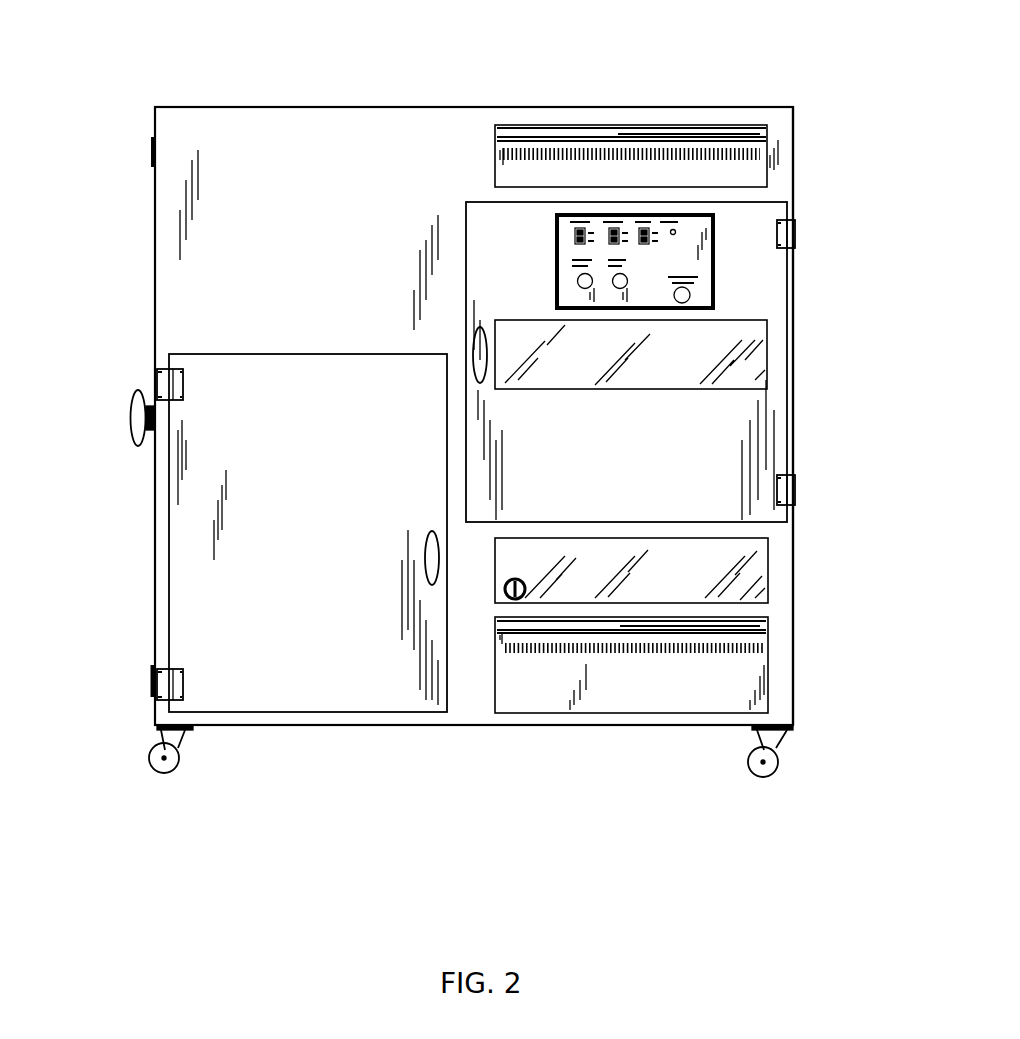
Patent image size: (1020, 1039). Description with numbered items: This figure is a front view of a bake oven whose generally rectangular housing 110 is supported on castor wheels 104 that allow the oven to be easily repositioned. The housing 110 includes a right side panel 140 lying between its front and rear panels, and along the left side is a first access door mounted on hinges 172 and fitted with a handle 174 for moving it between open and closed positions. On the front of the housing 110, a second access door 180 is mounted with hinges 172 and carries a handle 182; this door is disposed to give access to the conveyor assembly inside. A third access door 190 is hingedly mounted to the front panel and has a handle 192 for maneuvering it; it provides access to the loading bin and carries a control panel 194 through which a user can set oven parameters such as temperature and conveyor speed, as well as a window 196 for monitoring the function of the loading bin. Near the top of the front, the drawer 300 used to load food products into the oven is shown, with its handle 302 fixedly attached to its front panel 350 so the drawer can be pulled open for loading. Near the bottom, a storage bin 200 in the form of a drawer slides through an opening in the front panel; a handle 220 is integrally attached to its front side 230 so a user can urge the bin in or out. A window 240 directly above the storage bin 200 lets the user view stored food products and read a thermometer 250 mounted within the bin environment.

The castor wheels 104 is at (164, 770).
The housing 110 is at (362, 107).
The right side panel 140 is at (793, 420).
The hinges 172 is at (151, 143).
The handle 174 is at (137, 412).
The second access door 180 is at (308, 431).
The handle 182 is at (432, 560).
The third access door 190 is at (600, 362).
The handle 192 is at (479, 352).
The control panel 194 is at (570, 252).
The window 196 is at (750, 358).
The storage bin 200 is at (770, 670).
The handle 220 is at (760, 625).
The front side 230 is at (587, 700).
The window 240 is at (743, 582).
The thermometer 250 is at (519, 581).
The drawer 300 is at (775, 142).
The handle 302 is at (508, 134).
The front panel 350 is at (750, 168).